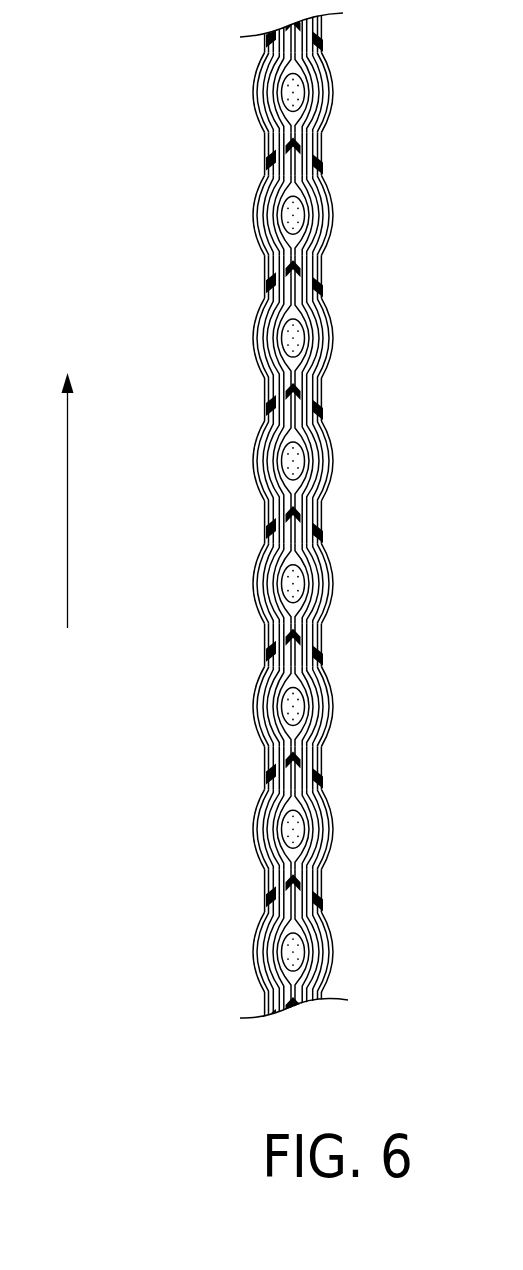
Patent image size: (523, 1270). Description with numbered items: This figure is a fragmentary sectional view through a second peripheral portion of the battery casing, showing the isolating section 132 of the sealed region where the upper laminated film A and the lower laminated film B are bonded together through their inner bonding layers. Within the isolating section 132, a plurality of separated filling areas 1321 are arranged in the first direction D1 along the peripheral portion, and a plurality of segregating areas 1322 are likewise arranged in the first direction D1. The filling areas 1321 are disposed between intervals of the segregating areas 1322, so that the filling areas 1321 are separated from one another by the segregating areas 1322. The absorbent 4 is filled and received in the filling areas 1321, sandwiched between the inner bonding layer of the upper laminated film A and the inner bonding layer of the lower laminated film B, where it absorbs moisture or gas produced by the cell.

The isolating section 132 is at (226, 288).
The filling areas 1321 is at (258, 470).
The segregating areas 1322 is at (265, 528).
The absorbent 4 is at (293, 465).
The upper laminated film A is at (253, 348).
The lower laminated film B is at (333, 345).
The first direction D1 is at (71, 485).